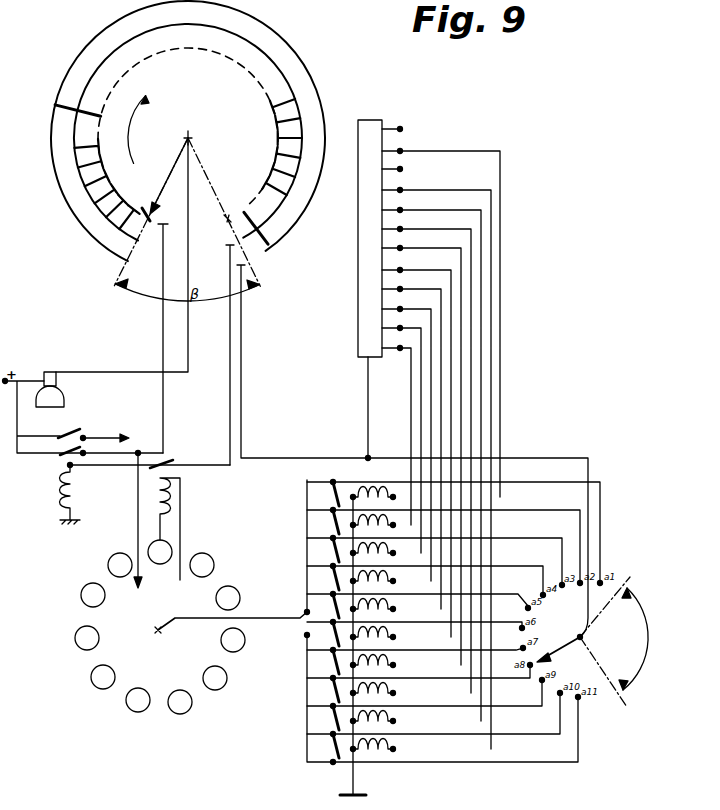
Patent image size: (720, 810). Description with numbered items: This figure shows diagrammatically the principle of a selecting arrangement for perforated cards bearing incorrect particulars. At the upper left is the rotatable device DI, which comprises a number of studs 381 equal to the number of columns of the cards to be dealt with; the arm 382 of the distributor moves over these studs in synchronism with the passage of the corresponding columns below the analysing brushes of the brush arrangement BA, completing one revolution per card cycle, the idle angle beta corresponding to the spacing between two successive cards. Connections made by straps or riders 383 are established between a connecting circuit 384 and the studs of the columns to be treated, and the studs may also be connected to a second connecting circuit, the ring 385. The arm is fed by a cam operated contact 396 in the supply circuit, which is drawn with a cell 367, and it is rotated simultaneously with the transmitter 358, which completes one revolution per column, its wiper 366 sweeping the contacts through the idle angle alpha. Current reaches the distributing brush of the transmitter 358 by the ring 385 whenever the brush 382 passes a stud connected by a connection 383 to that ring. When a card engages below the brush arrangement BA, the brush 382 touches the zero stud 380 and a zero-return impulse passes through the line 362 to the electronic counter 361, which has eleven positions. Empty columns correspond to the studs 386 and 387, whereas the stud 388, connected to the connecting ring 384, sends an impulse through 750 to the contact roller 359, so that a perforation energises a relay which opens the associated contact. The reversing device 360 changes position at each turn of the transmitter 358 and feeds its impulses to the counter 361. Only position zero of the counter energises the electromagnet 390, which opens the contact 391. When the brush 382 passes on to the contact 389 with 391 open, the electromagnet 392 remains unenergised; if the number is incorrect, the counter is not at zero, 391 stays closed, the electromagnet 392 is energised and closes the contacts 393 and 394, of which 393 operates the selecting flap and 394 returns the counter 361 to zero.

The second connecting circuit (ring) 385 is at (108, 27).
The rotatable device DI is at (247, 93).
The studs 381 is at (276, 153).
The straps or riders 383 is at (84, 186).
The contact 389 is at (100, 117).
The stud 388 is at (100, 207).
The connecting circuit (ring) 384 is at (114, 220).
The stud 387 is at (104, 242).
The stud 386 is at (147, 214).
The arm (brush) of the distributor 382 is at (169, 176).
The zero stud 380 is at (160, 226).
The cam operated contact 396 is at (47, 373).
The battery 367 is at (64, 397).
The contact 393 is at (93, 429).
The contact 394 is at (86, 453).
The line 362 is at (173, 416).
The contact 391 is at (157, 467).
The electromagnet 392 is at (62, 492).
The electromagnet 390 is at (172, 496).
The electronic counter 361 is at (122, 642).
The reversing device 360 is at (287, 622).
The contact roller 359 is at (376, 114).
The brush arrangement BA is at (424, 207).
The connection (line) 750 is at (368, 403).
The wiper arm 366 is at (567, 648).
The transmitter 358 is at (602, 673).